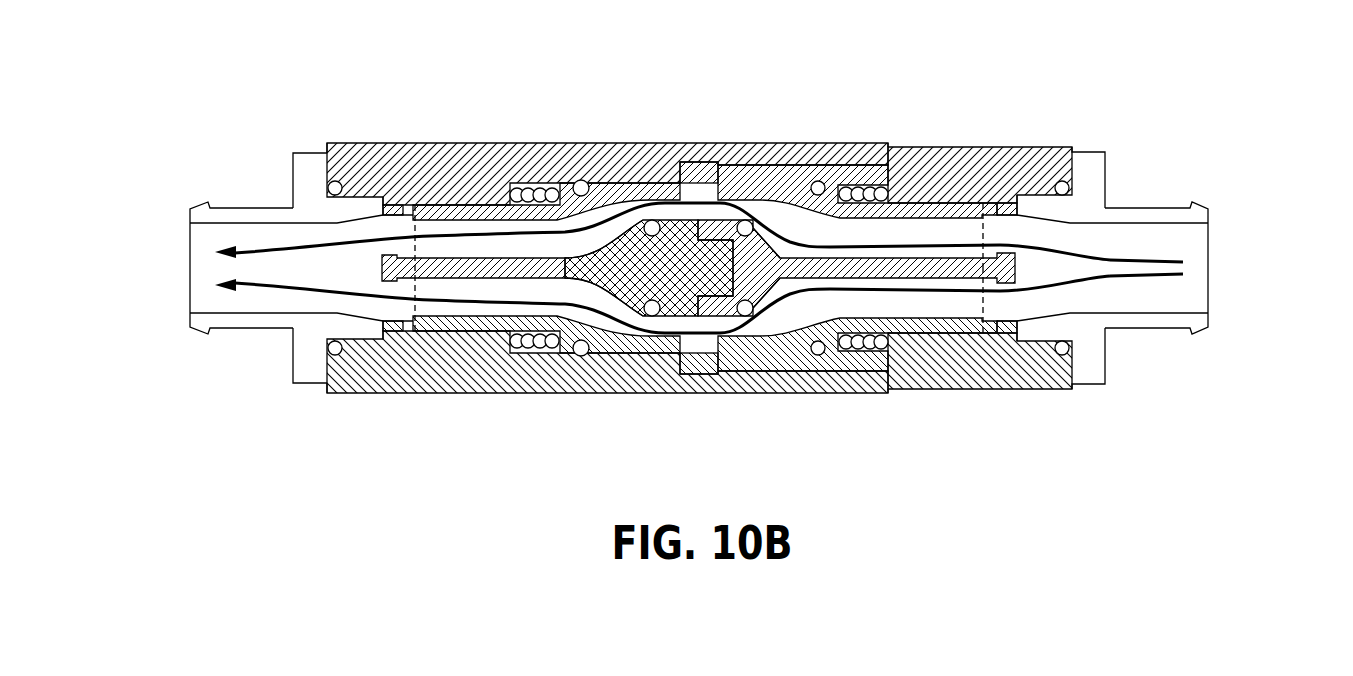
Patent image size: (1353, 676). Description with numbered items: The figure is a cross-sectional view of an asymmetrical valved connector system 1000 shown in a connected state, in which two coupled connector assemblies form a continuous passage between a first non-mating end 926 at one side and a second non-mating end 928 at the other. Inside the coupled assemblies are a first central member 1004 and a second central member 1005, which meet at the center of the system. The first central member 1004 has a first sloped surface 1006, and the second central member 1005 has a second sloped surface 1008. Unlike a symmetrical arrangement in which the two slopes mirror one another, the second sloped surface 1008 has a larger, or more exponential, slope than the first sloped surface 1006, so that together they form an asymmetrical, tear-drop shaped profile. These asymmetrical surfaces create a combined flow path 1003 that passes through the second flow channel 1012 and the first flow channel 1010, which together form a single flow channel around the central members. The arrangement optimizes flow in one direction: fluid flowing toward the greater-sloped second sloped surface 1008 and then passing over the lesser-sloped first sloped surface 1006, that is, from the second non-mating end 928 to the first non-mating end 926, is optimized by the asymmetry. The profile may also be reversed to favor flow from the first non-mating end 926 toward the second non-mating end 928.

The asymmetrical valved connector system 1000 is at (128, 84).
The first non-mating end 926 is at (225, 268).
The second non-mating end 928 is at (1180, 268).
The combined flow path 1003 is at (1140, 277).
The first central member 1004 is at (457, 260).
The second central member 1005 is at (918, 265).
The first sloped surface 1006 is at (597, 283).
The second sloped surface 1008 is at (760, 287).
The first flow channel 1010 is at (478, 236).
The second flow channel 1012 is at (920, 231).